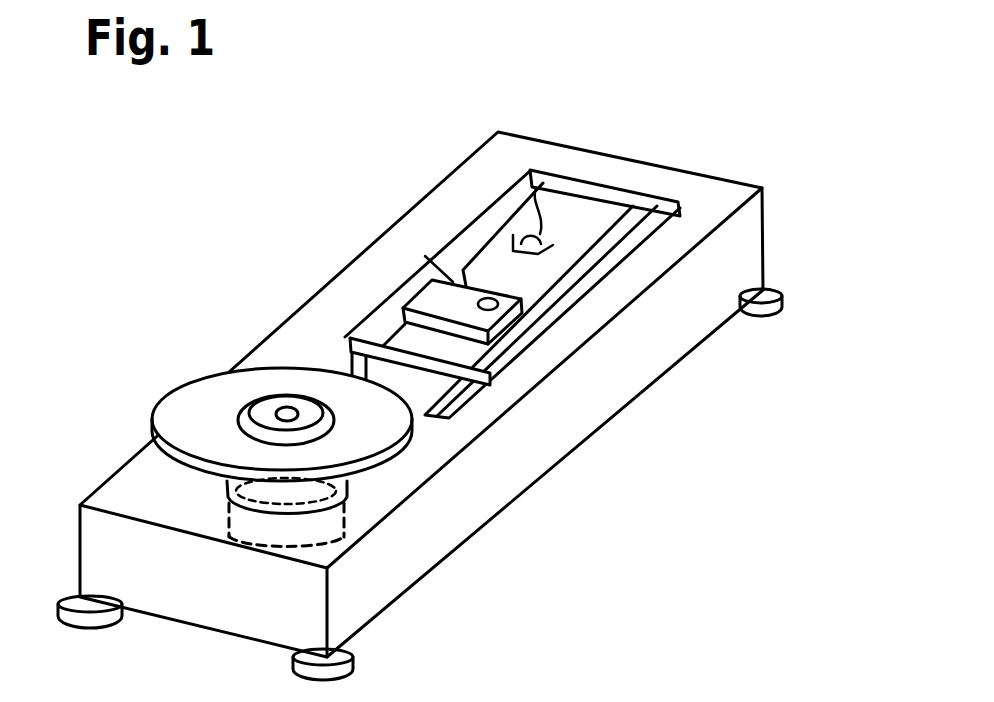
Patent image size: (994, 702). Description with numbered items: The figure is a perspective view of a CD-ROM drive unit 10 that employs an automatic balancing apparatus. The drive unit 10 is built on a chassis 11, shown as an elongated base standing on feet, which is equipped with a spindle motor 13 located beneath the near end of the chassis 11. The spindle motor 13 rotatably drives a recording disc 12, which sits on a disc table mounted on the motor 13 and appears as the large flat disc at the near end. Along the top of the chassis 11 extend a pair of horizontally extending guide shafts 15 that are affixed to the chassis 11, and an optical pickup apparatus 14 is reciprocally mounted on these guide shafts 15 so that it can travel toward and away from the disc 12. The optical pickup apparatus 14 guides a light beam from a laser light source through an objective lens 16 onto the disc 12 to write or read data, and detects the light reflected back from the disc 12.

The CD-ROM drive unit 10 is at (756, 178).
The chassis 11 is at (727, 265).
The recording disc 12 is at (232, 408).
The spindle motor 13 is at (257, 535).
The optical pickup apparatus 14 is at (465, 258).
The guide shafts 15 is at (522, 172).
The objective lens 16 is at (484, 300).